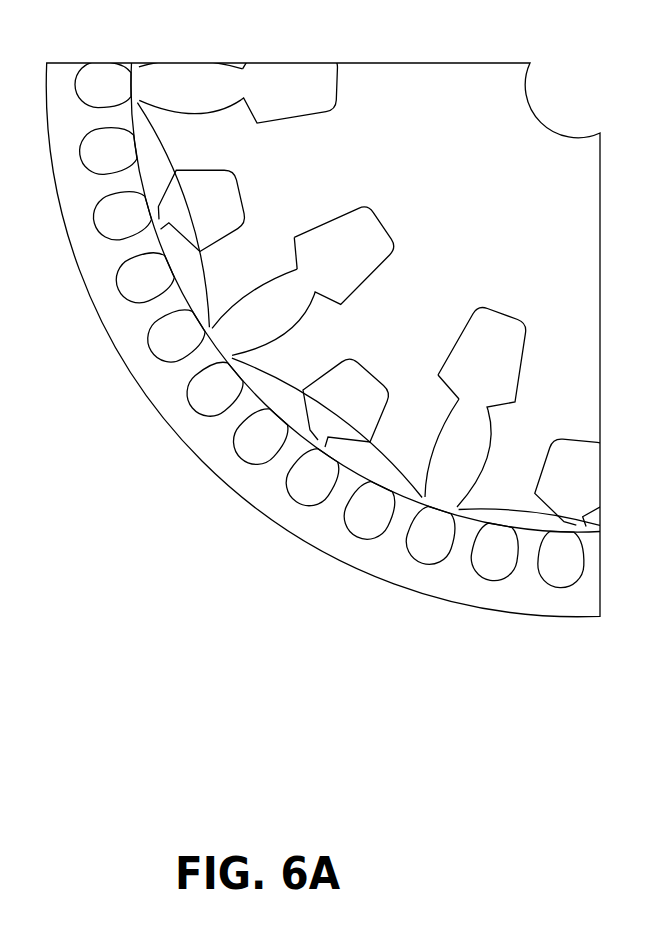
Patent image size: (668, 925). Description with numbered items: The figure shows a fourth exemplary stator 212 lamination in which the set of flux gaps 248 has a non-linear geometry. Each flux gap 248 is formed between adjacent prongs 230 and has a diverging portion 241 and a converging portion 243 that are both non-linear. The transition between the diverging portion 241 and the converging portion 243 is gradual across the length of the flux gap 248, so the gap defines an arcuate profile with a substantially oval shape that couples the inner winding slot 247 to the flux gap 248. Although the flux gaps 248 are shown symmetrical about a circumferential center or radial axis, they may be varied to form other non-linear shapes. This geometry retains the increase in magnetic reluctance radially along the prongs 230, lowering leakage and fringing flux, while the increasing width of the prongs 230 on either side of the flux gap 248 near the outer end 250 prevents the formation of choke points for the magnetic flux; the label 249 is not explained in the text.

The stator 212 is at (508, 143).
The prongs 230 is at (360, 467).
The diverging portion 241 is at (296, 318).
The converging portion 243 is at (250, 291).
The inner winding slot 247 is at (501, 371).
The flux gap 248 is at (472, 460).
The first side wall 249 is at (468, 417).
The outer end 250 is at (447, 475).